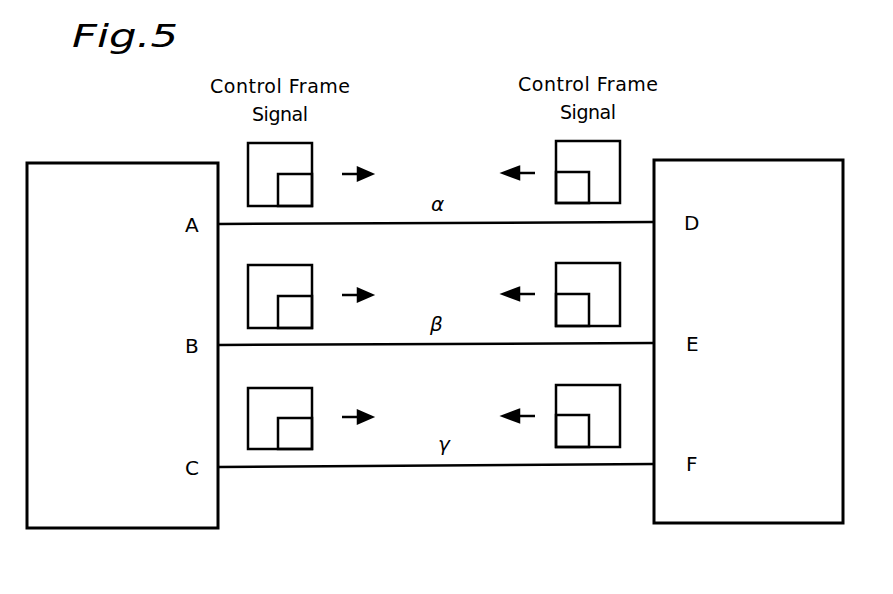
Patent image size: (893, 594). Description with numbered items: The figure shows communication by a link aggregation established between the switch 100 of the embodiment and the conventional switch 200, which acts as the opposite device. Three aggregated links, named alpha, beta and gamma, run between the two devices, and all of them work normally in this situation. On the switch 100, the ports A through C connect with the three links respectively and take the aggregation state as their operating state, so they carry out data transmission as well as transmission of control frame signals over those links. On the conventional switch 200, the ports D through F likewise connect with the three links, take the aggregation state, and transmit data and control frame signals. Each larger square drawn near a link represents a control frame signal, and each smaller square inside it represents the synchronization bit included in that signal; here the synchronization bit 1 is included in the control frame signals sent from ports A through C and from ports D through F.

The switch 100 is at (130, 162).
The conventional switch 200 is at (757, 158).
The synchronization bit 1 is at (434, 295).